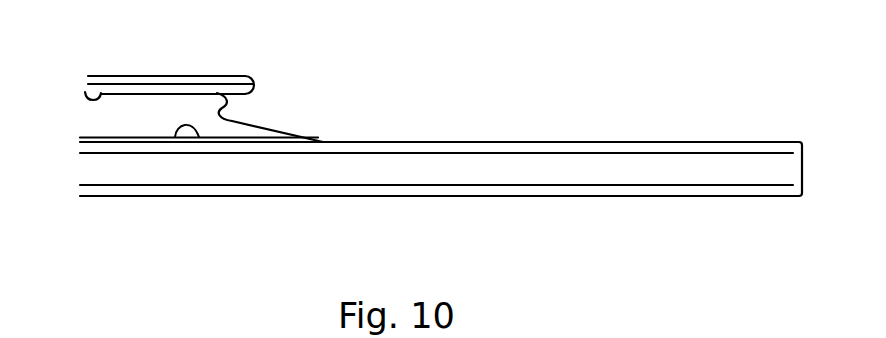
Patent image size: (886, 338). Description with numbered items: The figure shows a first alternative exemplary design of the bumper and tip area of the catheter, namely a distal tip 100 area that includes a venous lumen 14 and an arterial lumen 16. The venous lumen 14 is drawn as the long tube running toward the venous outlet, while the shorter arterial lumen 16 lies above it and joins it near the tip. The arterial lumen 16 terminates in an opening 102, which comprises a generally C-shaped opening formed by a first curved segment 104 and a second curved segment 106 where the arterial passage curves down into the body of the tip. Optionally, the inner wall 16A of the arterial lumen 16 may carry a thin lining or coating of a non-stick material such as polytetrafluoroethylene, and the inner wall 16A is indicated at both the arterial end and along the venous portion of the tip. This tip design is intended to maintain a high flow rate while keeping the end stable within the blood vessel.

The distal tip 100 is at (398, 82).
The venous lumen 14 is at (488, 173).
The arterial lumen 16 is at (165, 105).
The inner wall 16A is at (85, 92).
The opening 102 is at (258, 102).
The first curved segment 104 is at (217, 93).
The second curved segment 106 is at (245, 125).